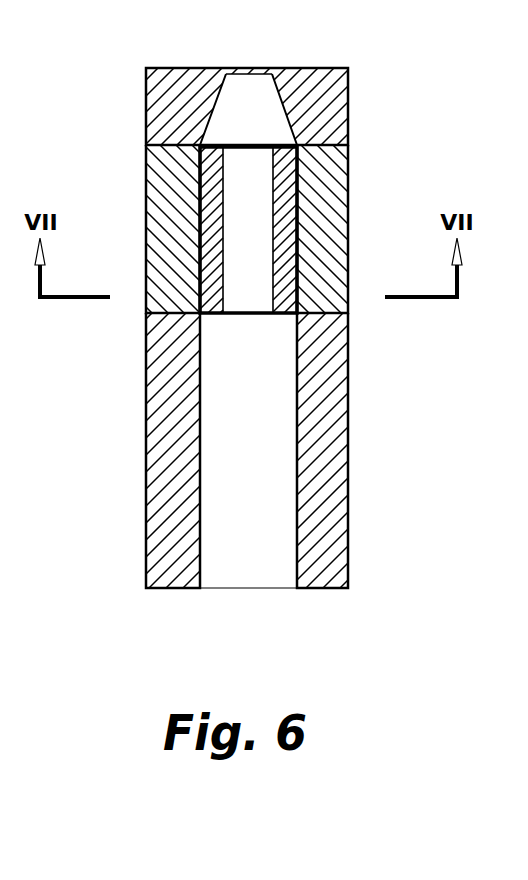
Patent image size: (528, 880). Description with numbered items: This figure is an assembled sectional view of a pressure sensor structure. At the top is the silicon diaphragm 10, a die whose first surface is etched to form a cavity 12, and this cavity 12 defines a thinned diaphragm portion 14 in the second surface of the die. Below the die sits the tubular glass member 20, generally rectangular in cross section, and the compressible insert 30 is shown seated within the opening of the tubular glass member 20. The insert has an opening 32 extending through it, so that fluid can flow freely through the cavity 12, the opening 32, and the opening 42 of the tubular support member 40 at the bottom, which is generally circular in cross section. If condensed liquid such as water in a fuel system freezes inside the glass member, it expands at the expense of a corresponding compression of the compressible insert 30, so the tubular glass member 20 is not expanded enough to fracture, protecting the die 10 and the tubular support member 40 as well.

The silicon diaphragm 10 is at (162, 88).
The cavity 12 is at (286, 100).
The diaphragm portion 14 is at (250, 68).
The tubular glass member 20 is at (146, 188).
The compressible insert 30 is at (297, 218).
The opening 32 is at (245, 296).
The tubular support member 40 is at (343, 430).
The opening 42 is at (248, 577).